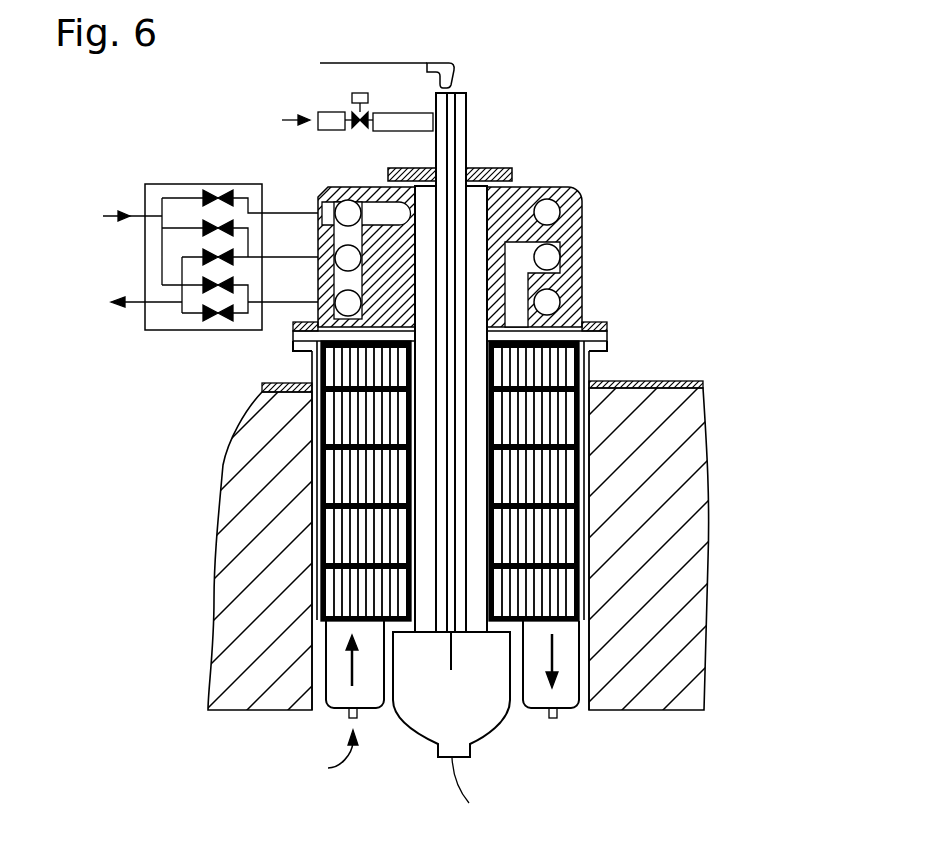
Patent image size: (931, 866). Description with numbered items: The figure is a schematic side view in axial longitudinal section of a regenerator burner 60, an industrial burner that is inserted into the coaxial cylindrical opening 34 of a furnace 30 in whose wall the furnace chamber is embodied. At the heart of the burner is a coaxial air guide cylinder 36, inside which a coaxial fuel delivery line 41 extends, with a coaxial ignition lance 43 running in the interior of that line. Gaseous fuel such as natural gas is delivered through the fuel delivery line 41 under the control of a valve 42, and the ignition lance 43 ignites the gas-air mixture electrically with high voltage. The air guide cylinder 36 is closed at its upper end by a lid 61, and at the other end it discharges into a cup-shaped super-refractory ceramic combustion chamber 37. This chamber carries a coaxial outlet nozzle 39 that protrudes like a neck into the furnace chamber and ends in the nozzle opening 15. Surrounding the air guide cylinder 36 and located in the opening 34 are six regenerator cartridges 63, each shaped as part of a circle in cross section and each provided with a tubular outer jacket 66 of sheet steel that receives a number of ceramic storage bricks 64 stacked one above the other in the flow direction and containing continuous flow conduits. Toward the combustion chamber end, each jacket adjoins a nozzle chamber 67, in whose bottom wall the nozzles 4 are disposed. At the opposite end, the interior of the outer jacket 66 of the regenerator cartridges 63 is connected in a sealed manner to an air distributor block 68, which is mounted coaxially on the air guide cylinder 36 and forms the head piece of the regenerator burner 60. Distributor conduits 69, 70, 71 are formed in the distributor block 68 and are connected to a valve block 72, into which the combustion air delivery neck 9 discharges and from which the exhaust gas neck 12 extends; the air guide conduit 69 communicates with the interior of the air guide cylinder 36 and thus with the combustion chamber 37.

The nozzles 4 is at (349, 717).
The combustion air delivery neck 9 is at (125, 213).
The exhaust gas neck 12 is at (112, 306).
The nozzle opening 15 is at (474, 789).
The furnace 30 is at (685, 502).
The opening 34 is at (318, 527).
The air guide cylinder 36 is at (413, 592).
The combustion chamber 37 is at (449, 713).
The outlet nozzle 39 is at (437, 744).
The fuel delivery line 41 is at (467, 138).
The valve 42 is at (360, 128).
The ignition lance 43 is at (468, 100).
The regenerator burner 60 is at (688, 183).
The lid 61 is at (502, 170).
The regenerator cartridges 63 is at (586, 463).
The ceramic storage bricks 64 is at (557, 603).
The outer jacket 66 is at (323, 438).
The nozzle chamber 67 is at (568, 690).
The air distributor block 68 is at (580, 272).
The air guide conduit 69 is at (560, 208).
The distributor conduit 70 is at (557, 255).
The distributor conduit 71 is at (558, 302).
The valve block 72 is at (152, 190).